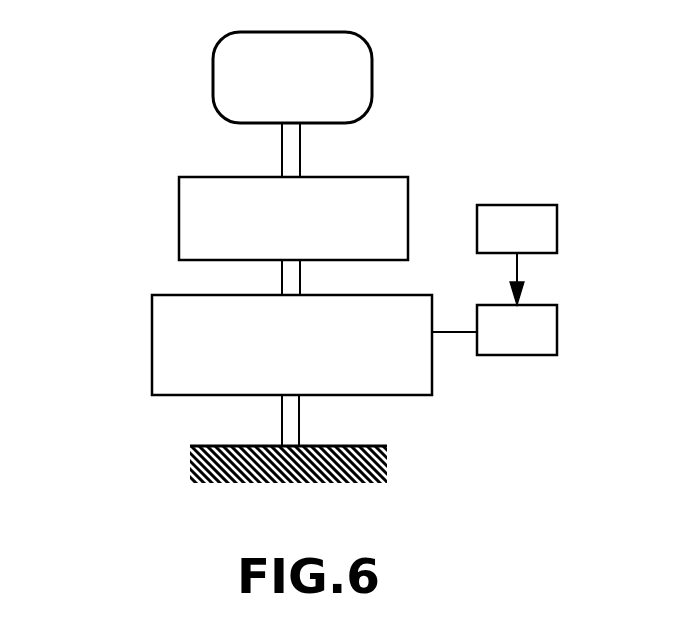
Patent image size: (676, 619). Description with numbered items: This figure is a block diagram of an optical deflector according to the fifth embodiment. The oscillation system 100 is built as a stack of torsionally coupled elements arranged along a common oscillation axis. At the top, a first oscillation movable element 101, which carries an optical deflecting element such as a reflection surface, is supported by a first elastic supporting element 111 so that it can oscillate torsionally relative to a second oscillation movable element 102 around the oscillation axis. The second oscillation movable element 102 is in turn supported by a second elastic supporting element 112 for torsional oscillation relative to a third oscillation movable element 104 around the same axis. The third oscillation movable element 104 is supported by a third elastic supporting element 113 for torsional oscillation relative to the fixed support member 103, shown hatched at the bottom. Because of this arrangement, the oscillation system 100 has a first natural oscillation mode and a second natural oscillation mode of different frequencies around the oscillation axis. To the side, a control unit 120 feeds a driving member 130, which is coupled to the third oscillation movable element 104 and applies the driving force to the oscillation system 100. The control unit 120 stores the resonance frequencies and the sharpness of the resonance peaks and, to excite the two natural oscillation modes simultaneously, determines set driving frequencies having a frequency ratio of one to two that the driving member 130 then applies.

The oscillation system 100 is at (153, 181).
The first oscillation movable element 101 is at (292, 77).
The second oscillation movable element 102 is at (293, 218).
The support member 103 is at (386, 465).
The third oscillation movable element 104 is at (292, 345).
The first elastic supporting element 111 is at (280, 152).
The second elastic supporting element 112 is at (281, 284).
The third elastic supporting element 113 is at (281, 421).
The control unit 120 is at (517, 255).
The driving member 130 is at (494, 330).